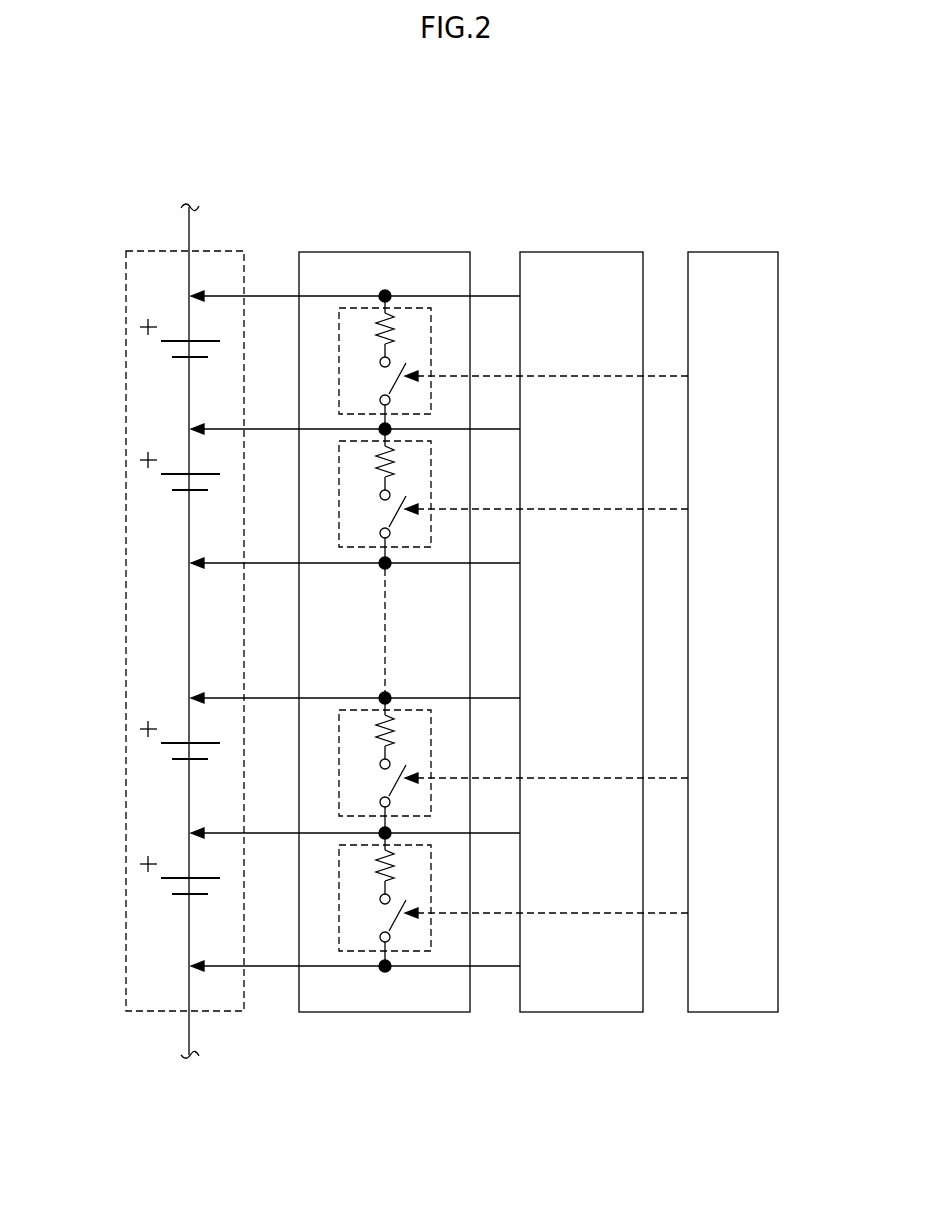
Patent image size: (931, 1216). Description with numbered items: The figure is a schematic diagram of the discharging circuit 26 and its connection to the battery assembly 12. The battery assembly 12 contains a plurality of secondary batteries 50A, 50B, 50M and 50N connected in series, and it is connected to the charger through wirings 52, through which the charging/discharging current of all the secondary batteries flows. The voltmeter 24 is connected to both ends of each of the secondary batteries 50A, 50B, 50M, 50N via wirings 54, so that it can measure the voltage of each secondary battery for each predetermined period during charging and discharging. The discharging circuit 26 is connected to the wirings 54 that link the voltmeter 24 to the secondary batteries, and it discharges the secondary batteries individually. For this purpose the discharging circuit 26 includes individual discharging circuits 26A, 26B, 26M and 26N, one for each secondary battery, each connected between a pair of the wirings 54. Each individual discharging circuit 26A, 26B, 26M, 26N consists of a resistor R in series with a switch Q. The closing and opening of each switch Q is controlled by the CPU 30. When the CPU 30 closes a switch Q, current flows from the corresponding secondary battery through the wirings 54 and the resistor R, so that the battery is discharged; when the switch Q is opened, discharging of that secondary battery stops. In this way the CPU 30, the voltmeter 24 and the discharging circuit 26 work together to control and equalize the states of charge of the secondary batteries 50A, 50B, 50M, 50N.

The battery assembly 12 is at (222, 251).
The voltmeter 24 is at (608, 252).
The discharging circuit 26 is at (443, 252).
The individual discharging circuit 26N is at (432, 351).
The individual discharging circuit 26M is at (432, 484).
The individual discharging circuit 26B is at (432, 753).
The individual discharging circuit 26A is at (432, 888).
The CPU 30 is at (740, 252).
The secondary battery 50N is at (160, 344).
The secondary battery 50M is at (160, 477).
The secondary battery 50B is at (160, 746).
The secondary battery 50A is at (160, 881).
The wirings 52 is at (187, 1035).
The wirings 54 is at (281, 969).